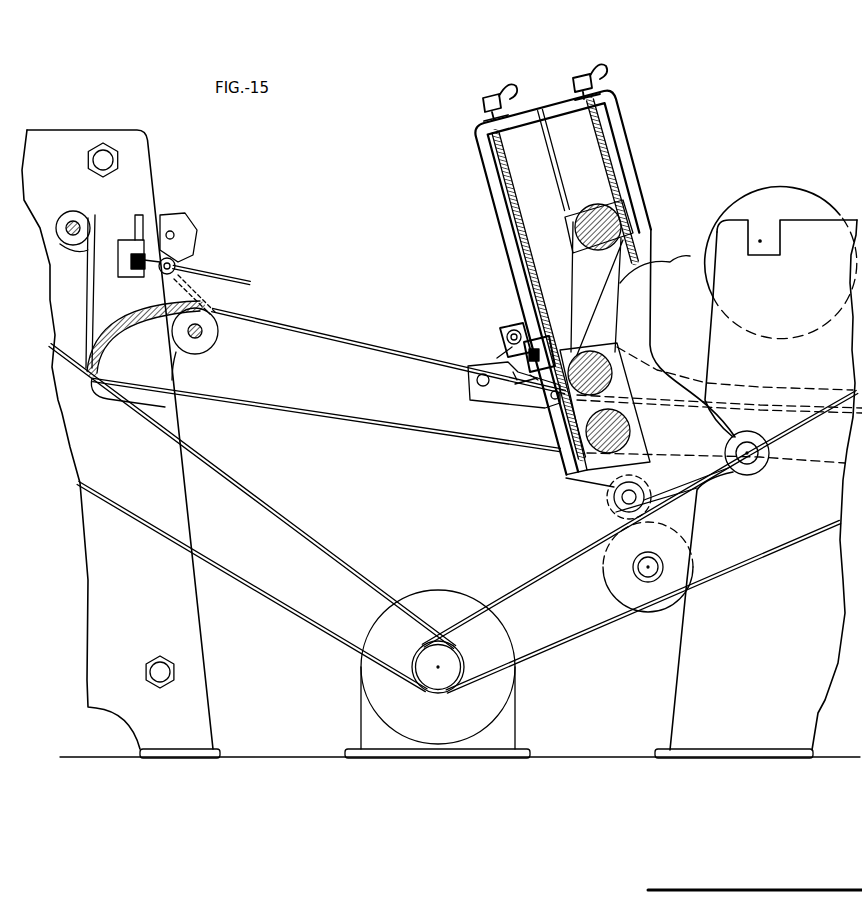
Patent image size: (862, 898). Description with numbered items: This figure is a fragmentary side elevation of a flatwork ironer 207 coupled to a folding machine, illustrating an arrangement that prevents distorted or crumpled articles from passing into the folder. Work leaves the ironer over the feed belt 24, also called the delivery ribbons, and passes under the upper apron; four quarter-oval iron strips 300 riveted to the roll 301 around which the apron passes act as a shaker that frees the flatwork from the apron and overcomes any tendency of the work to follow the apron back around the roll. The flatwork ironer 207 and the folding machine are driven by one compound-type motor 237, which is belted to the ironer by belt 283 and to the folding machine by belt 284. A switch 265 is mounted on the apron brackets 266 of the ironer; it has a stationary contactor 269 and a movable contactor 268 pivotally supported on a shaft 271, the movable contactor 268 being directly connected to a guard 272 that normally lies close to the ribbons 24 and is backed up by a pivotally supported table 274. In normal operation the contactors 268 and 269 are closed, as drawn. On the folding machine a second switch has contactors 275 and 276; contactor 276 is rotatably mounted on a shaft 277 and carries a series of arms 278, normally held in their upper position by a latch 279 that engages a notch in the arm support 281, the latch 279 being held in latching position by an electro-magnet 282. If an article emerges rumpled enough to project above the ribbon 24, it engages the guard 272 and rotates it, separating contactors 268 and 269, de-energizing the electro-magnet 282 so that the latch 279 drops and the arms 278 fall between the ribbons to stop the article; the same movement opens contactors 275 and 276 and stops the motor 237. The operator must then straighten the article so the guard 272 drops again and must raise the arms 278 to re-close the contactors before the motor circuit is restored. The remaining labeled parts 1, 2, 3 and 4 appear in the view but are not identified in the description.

The bracket 1 is at (153, 398).
The side frame 2 is at (177, 619).
The bolt 3 is at (103, 160).
The pulley 4 is at (84, 218).
The feed belt 24 is at (318, 327).
The flatwork ironer 207 is at (730, 653).
The motor 237 is at (493, 697).
The switch 265 is at (532, 375).
The apron brackets 266 is at (620, 167).
The contactor 268 is at (522, 382).
The contactor 269 is at (515, 373).
The shaft 271 is at (508, 330).
The guard 272 is at (498, 360).
The table 274 is at (470, 374).
The contactor 275 is at (170, 233).
The contactor 276 is at (182, 243).
The shaft 277 is at (180, 263).
The arms 278 is at (233, 273).
The latch 279 is at (143, 278).
The arm support 281 is at (175, 273).
The electro-magnet 282 is at (138, 277).
The belt 283 is at (550, 570).
The belt 284 is at (320, 528).
The quarter-oval iron strips 300 is at (592, 350).
The roll 301 is at (617, 382).